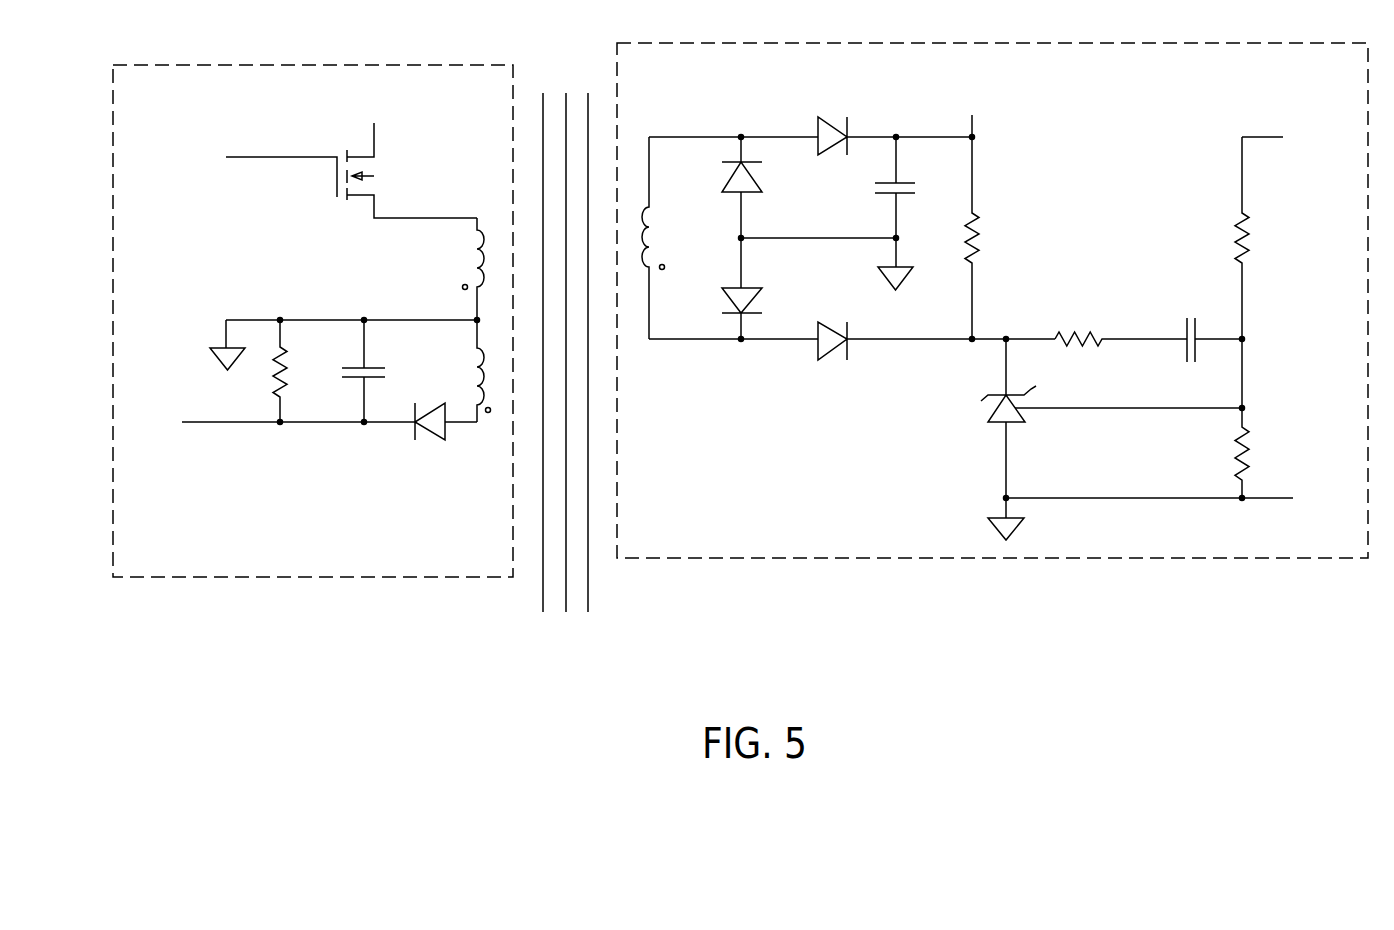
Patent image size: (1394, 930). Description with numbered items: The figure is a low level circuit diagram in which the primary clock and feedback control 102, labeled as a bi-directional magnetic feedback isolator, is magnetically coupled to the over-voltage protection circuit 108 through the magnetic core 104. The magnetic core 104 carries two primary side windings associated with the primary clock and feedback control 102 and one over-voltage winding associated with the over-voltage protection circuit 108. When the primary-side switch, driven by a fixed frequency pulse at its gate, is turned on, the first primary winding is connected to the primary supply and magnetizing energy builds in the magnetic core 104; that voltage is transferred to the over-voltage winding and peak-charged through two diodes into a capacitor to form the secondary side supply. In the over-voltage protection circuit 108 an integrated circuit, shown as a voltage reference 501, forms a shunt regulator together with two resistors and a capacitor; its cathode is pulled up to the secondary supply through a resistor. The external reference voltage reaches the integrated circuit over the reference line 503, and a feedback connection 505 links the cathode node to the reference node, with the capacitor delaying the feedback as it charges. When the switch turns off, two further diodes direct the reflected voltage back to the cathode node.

The primary clock and feedback control 102 is at (313, 64).
The magnetic core 104 is at (540, 600).
The over-voltage protection circuit 108 is at (830, 43).
The voltage reference 501 is at (990, 408).
The reference line 503 is at (1217, 405).
The feedback connection 505 is at (1225, 288).